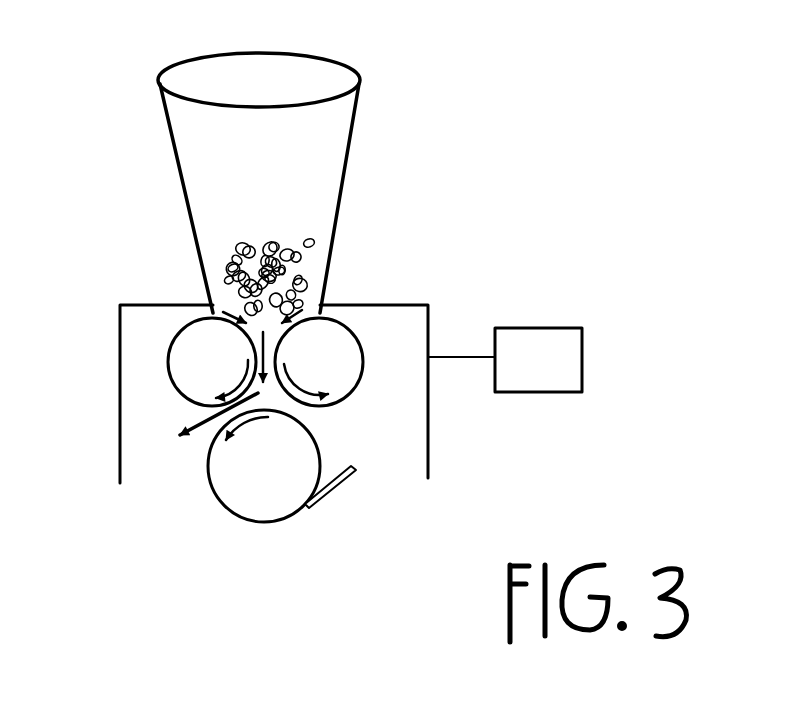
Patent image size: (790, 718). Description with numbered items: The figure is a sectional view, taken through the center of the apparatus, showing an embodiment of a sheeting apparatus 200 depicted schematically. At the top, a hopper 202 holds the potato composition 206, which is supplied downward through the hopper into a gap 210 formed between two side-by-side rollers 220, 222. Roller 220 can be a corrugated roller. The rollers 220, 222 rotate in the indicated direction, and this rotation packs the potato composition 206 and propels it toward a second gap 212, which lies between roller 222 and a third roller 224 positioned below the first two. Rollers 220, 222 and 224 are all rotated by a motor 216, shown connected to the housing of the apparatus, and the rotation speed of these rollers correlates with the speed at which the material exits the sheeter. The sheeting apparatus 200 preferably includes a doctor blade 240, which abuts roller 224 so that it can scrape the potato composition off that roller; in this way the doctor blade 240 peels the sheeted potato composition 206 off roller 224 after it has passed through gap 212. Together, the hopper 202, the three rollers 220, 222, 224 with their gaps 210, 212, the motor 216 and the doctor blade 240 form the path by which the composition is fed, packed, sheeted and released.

The sheeting apparatus 200 is at (422, 74).
The hopper 202 is at (372, 147).
The potato composition 206 is at (304, 242).
The gap 210 is at (285, 341).
The gap 212 is at (207, 408).
The motor 216 is at (547, 392).
The roller 220 is at (162, 348).
The roller 222 is at (370, 346).
The roller 224 is at (209, 496).
The doctor blade 240 is at (331, 496).